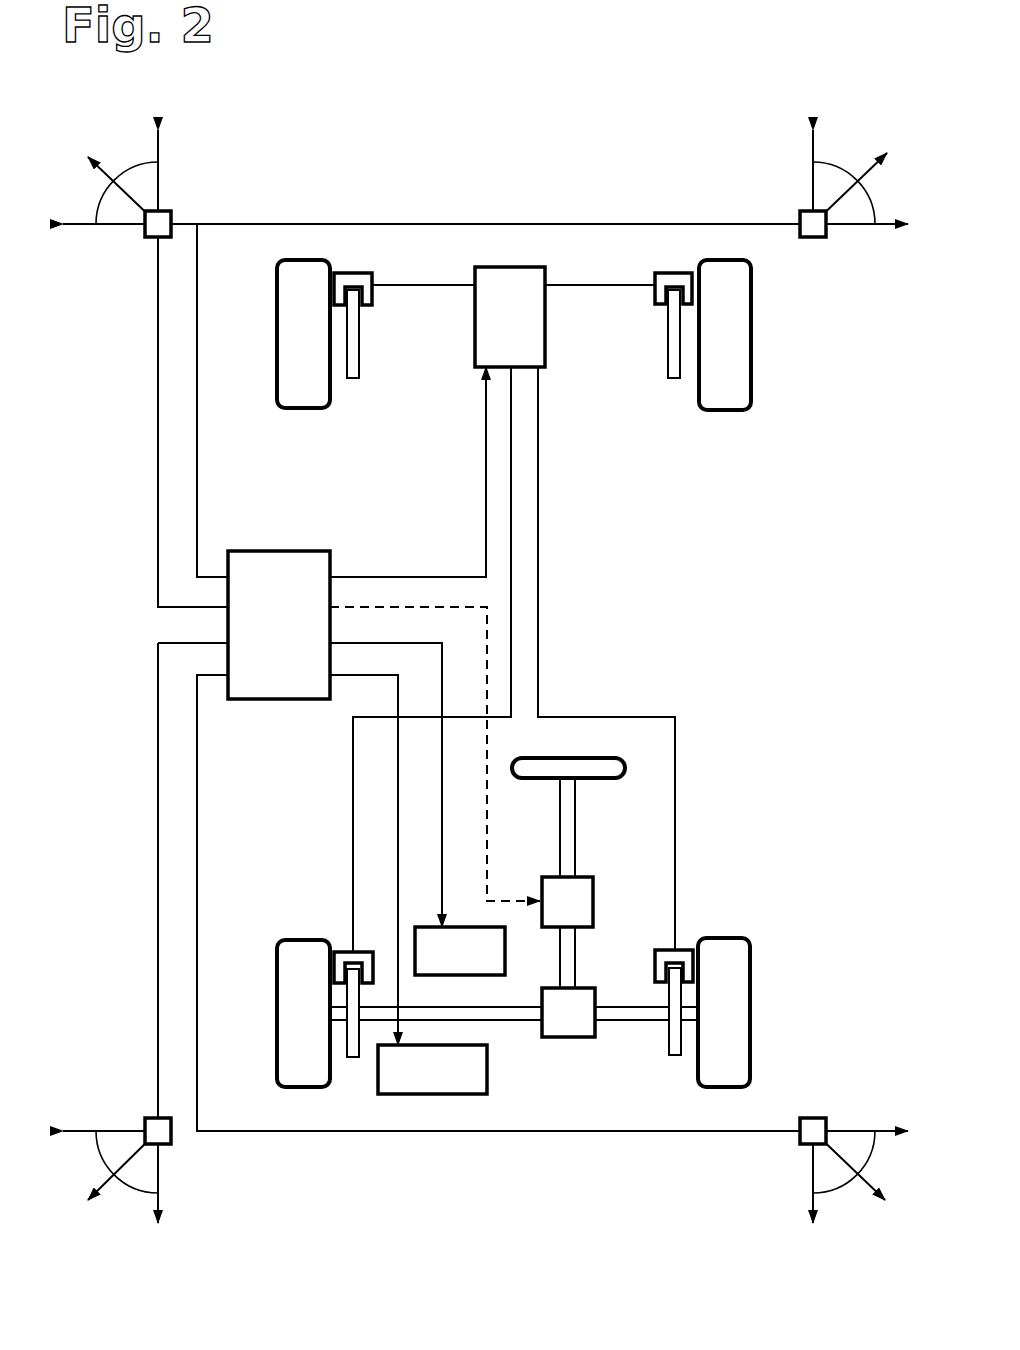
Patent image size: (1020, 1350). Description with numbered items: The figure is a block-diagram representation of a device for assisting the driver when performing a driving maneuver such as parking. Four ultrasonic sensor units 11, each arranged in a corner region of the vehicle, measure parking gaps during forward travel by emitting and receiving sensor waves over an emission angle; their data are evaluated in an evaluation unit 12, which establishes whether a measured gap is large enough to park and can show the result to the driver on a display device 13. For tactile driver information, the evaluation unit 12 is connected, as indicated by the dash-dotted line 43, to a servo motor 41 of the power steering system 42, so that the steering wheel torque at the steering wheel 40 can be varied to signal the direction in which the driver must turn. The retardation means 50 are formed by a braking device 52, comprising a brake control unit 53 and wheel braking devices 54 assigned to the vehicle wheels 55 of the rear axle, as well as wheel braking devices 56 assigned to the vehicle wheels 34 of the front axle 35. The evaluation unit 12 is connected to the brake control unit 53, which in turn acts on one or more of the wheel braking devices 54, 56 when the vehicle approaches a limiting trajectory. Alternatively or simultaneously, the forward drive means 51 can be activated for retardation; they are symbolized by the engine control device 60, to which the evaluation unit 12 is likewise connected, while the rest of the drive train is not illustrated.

The ultrasonic sensor unit 11 is at (165, 216).
The evaluation unit 12 is at (247, 560).
The display device 13 is at (485, 935).
The vehicle wheels of the front axle 34 is at (295, 945).
The front axle 35 is at (622, 1012).
The steering wheel 40 is at (600, 765).
The servo motor 41 is at (582, 887).
The power steering system 42 is at (605, 957).
The dash-dotted line 43 is at (487, 627).
The retardation means 50 is at (514, 679).
The forward drive means 51 is at (496, 1078).
The braking device 52 is at (665, 265).
The brake control unit 53 is at (540, 363).
The wheel braking devices 54 is at (350, 420).
The vehicle wheels of the rear axle 55 is at (300, 270).
The wheel braking devices 56 is at (340, 945).
The engine control device 60 is at (485, 1080).